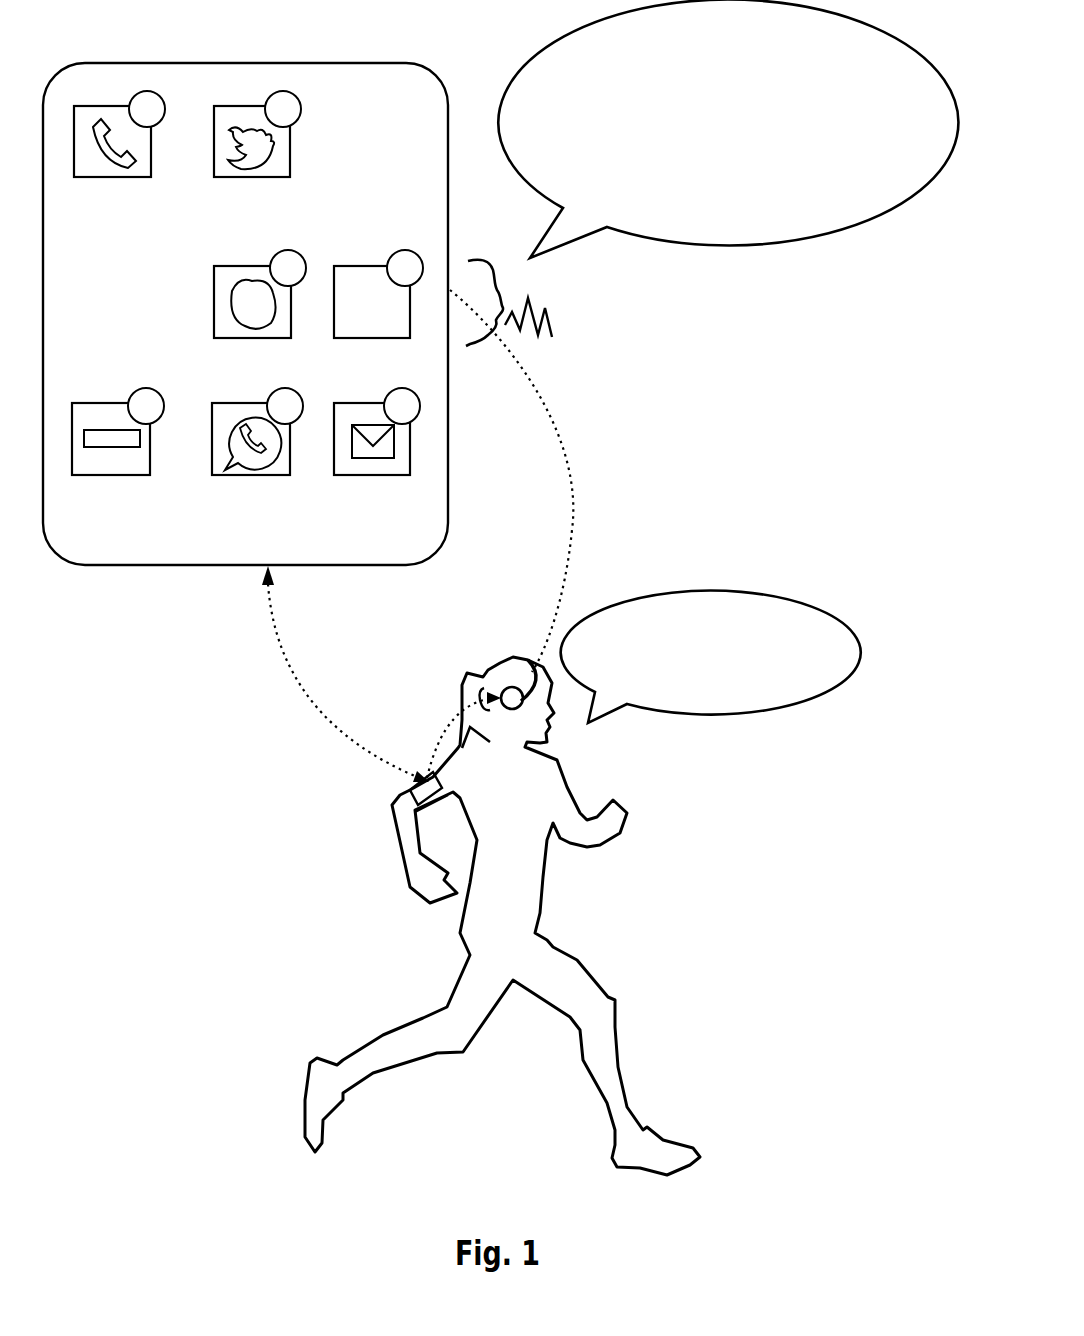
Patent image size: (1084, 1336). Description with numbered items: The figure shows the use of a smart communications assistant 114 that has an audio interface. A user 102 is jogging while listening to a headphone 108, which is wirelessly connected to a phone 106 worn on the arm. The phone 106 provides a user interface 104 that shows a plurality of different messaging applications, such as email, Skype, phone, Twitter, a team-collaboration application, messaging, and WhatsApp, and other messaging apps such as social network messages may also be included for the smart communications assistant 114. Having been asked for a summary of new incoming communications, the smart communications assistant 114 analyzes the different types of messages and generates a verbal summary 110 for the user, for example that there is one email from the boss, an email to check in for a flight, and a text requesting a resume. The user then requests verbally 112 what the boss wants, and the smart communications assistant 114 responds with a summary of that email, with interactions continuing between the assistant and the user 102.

The user 102 is at (397, 830).
The user interface 104 is at (245, 63).
The phone 106 is at (447, 780).
The headphone 108 is at (510, 690).
The verbal summary 110 is at (553, 45).
The verbal request 112 is at (838, 620).
The smart communications assistant 114 is at (490, 340).